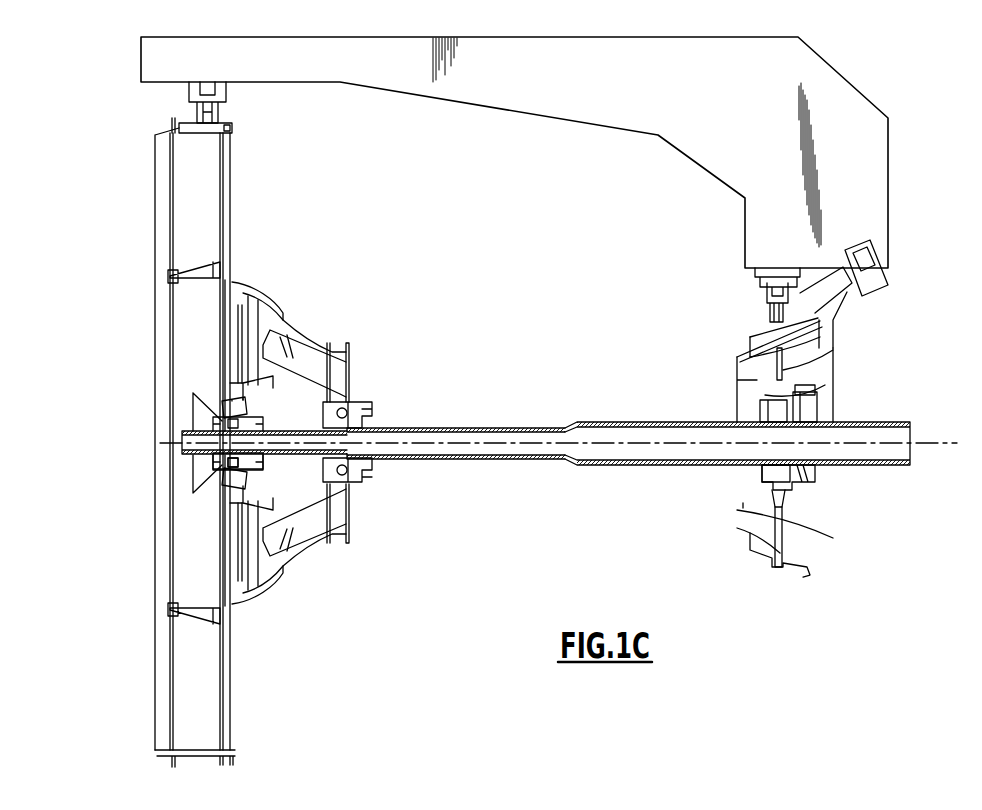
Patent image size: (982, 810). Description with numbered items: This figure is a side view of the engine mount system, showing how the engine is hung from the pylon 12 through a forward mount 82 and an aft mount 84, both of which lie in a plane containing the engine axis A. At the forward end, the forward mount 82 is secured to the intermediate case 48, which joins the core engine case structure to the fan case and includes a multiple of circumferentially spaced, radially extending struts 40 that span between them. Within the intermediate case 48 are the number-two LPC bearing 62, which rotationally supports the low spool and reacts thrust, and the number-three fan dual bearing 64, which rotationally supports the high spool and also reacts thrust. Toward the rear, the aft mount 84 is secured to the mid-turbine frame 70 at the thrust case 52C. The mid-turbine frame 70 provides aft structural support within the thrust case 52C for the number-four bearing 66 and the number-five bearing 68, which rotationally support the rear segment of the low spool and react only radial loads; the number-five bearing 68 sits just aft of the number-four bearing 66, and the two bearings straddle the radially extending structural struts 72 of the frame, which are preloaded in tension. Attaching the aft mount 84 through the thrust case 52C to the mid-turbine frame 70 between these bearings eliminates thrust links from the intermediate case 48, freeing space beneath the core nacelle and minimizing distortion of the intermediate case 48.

The pylon 12 is at (641, 58).
The forward mount 82 is at (179, 104).
The struts 40 is at (205, 205).
The intermediate case (IMC) 48 is at (268, 282).
The #2 LPC bearing 62 is at (227, 488).
The #3 fan dual bearing 64 is at (347, 473).
The #4 bearing 66 is at (755, 424).
The #5 bearing 68 is at (805, 390).
The mid-turbine frame (MTF) 70 is at (727, 390).
The structural struts 72 is at (805, 344).
The thrust case 52C is at (753, 327).
The aft mount 84 is at (878, 297).
The axis A is at (940, 444).